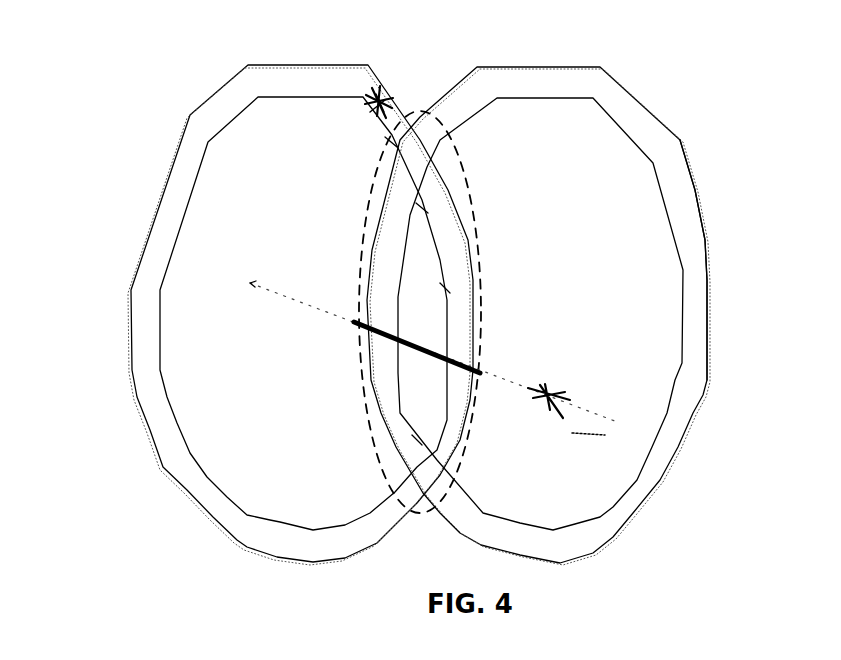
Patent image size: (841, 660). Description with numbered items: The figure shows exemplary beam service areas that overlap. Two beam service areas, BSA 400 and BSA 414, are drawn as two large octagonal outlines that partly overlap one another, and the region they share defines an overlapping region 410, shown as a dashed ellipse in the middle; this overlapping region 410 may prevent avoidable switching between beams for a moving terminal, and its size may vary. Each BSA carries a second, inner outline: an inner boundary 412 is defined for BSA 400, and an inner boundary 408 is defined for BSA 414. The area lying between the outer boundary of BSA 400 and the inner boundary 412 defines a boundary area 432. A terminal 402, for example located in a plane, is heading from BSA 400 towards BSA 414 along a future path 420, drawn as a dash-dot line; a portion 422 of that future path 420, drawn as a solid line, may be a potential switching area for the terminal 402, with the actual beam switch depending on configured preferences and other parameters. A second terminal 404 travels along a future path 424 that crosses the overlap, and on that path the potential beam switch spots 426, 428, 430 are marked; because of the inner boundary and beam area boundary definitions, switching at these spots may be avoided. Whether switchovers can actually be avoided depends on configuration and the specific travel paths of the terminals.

The beam service area 400 is at (677, 140).
The terminal 402 is at (545, 392).
The terminal 404 is at (385, 116).
The inner boundary 408 is at (153, 198).
The overlapping region 410 is at (367, 213).
The inner boundary 412 is at (683, 318).
The beam service area 414 is at (160, 335).
The future path 420 is at (490, 372).
The portion of future path 422 is at (398, 342).
The future path 424 is at (390, 142).
The potential beam switch spot 426 is at (421, 208).
The potential beam switch spot 428 is at (445, 288).
The potential beam switch spot 430 is at (417, 440).
The boundary area 432 is at (637, 128).